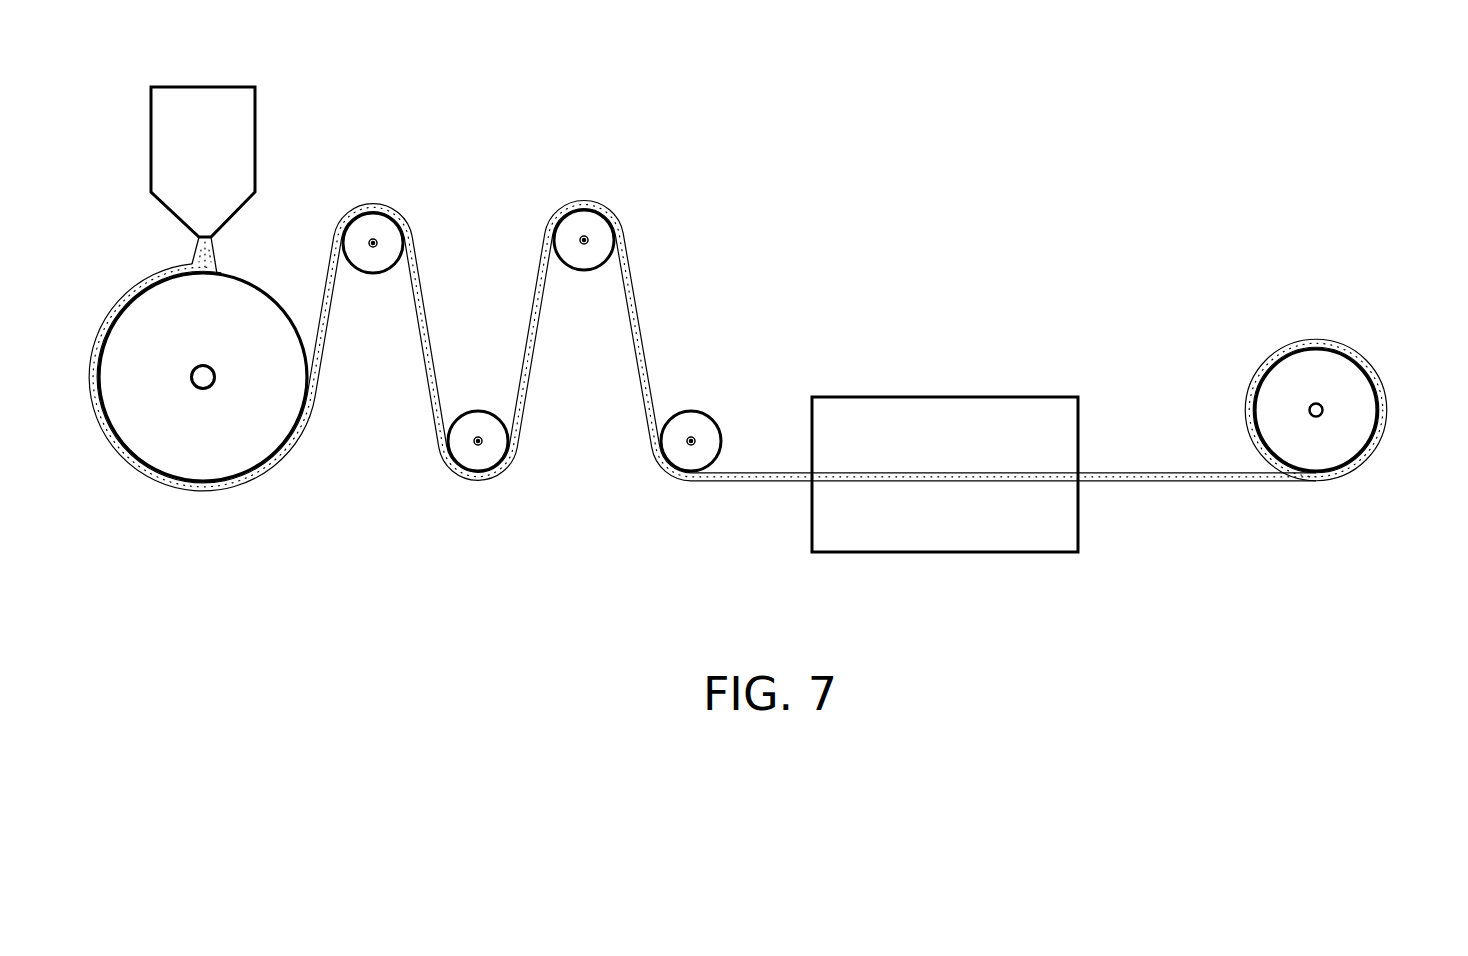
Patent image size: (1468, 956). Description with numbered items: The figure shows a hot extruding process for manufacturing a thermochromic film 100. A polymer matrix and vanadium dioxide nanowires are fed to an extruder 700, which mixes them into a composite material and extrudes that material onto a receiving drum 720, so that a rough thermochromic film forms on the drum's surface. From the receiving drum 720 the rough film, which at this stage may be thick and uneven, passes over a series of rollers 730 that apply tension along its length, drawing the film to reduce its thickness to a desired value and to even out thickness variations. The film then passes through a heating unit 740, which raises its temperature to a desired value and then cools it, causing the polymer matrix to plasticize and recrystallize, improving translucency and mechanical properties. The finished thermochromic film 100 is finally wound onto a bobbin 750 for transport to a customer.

The extruder 700 is at (265, 97).
The receiving drum 720 is at (220, 415).
The series of rollers 730 is at (583, 284).
The heating unit 740 is at (933, 380).
The bobbin 750 is at (1312, 378).
The thermochromic film 100 is at (1343, 340).